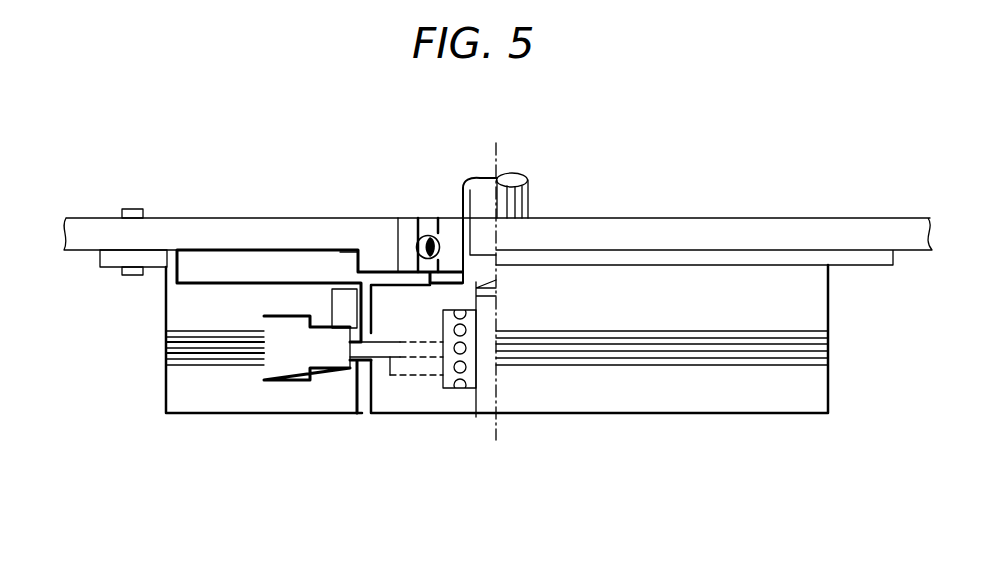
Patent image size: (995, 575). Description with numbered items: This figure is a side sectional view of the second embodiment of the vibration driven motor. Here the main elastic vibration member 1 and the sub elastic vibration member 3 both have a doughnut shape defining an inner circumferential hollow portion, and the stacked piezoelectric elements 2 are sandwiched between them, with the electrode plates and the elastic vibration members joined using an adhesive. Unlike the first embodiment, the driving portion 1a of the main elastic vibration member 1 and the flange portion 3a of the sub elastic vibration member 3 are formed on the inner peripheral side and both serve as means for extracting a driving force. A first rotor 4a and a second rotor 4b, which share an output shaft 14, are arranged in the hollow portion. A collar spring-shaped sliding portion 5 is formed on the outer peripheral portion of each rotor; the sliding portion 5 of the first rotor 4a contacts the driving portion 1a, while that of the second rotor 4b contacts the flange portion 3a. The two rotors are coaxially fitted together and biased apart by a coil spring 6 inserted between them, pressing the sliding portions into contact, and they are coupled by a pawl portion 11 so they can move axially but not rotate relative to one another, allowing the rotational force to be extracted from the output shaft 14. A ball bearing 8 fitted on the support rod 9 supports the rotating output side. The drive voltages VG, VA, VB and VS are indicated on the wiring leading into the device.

The main elastic vibration member 1 is at (233, 295).
The driving portion 1a is at (332, 305).
The stacked piezoelectric elements 2 is at (208, 350).
The sub elastic vibration member 3 is at (240, 402).
The flange portion 3a is at (317, 378).
The first rotor 4a is at (383, 297).
The second rotor 4b is at (390, 397).
The sliding portion 5 is at (355, 372).
The coil spring 6 is at (460, 370).
The ball bearing 8 is at (407, 228).
The support rod 9 is at (175, 276).
The pawl portion 11 is at (418, 365).
The output shaft 14 is at (468, 187).
The ground voltage line VG is at (166, 331).
The voltage line A VA is at (166, 340).
The voltage line B VB is at (166, 352).
The supply voltage line VS is at (166, 365).